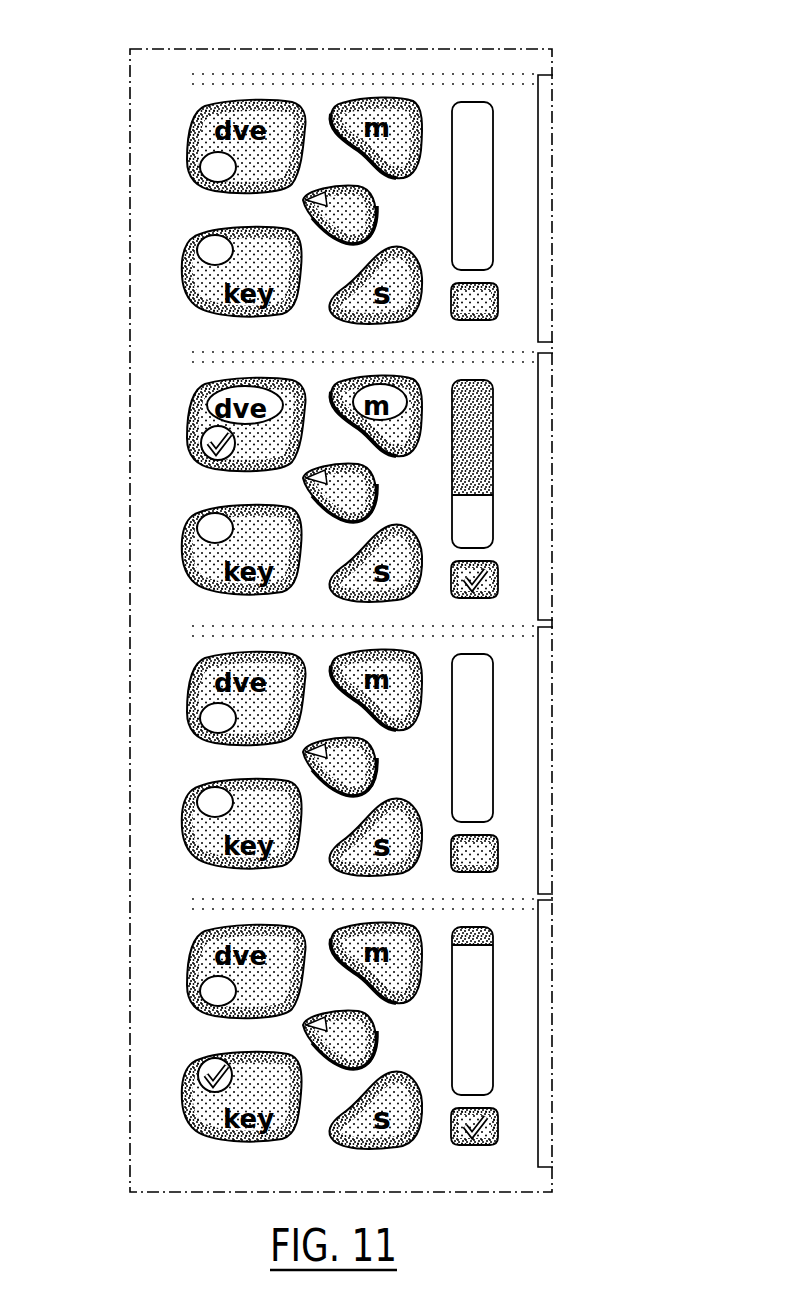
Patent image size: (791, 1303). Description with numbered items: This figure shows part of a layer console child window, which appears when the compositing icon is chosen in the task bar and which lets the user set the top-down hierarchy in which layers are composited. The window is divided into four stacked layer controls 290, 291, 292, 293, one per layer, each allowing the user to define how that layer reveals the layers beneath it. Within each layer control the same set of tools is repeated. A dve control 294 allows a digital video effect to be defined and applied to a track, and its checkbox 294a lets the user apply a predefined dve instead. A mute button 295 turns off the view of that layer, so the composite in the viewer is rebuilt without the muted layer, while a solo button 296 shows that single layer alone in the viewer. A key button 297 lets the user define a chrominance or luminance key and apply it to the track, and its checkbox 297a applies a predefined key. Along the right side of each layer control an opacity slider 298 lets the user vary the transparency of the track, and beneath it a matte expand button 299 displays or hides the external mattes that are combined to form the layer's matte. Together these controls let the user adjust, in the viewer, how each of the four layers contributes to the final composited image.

The layer control 290 is at (182, 202).
The layer control 291 is at (172, 473).
The layer control 292 is at (155, 785).
The layer control 293 is at (157, 1033).
The dve control 294 is at (287, 118).
The checkbox 294a is at (213, 163).
The mute button 295 is at (400, 115).
The solo button 296 is at (412, 318).
The key button 297 is at (195, 575).
The checkbox 297a is at (212, 528).
The opacity slider 298 is at (478, 533).
The matte expand button 299 is at (475, 870).